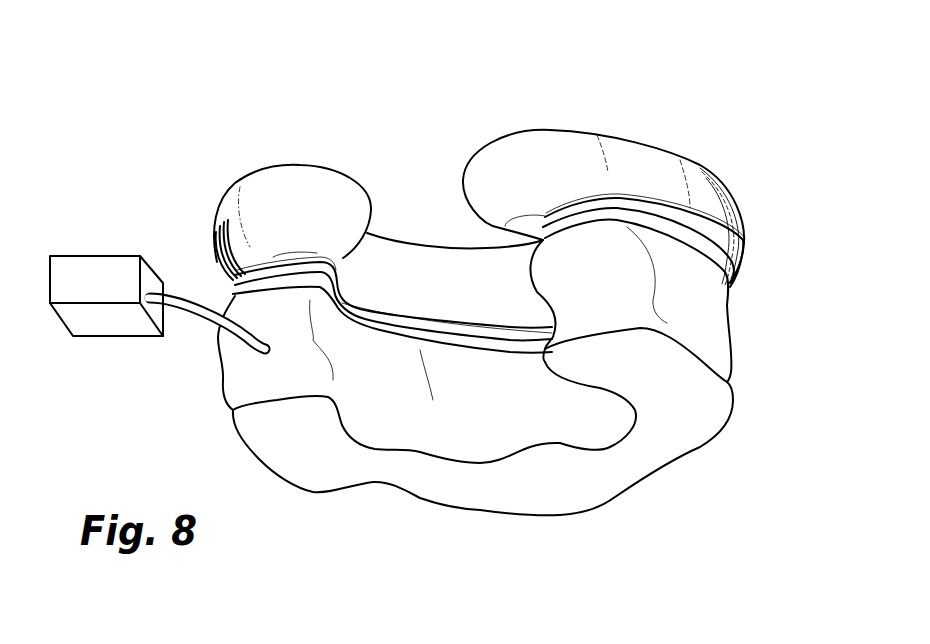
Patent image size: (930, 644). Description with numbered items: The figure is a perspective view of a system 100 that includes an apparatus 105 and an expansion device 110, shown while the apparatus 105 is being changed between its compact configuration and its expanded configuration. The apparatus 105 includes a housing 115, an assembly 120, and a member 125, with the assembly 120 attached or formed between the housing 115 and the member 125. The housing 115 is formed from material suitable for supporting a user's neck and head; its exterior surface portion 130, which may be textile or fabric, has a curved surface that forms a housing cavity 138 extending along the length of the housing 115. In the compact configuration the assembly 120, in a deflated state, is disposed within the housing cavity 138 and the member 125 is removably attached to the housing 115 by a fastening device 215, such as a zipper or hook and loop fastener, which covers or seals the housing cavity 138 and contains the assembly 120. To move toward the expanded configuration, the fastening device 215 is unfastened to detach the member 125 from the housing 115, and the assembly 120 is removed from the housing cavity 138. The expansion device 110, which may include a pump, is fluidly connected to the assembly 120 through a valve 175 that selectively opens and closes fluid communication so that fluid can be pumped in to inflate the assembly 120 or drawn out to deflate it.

The system 100 is at (444, 293).
The apparatus 105 is at (526, 309).
The expansion device 110 is at (95, 243).
The housing 115 is at (735, 182).
The assembly 120 is at (528, 401).
The member 125 is at (306, 502).
The exterior surface portion 130 is at (532, 153).
The housing cavity 138 is at (735, 326).
The valve 175 is at (256, 364).
The fastening device 215 is at (748, 270).